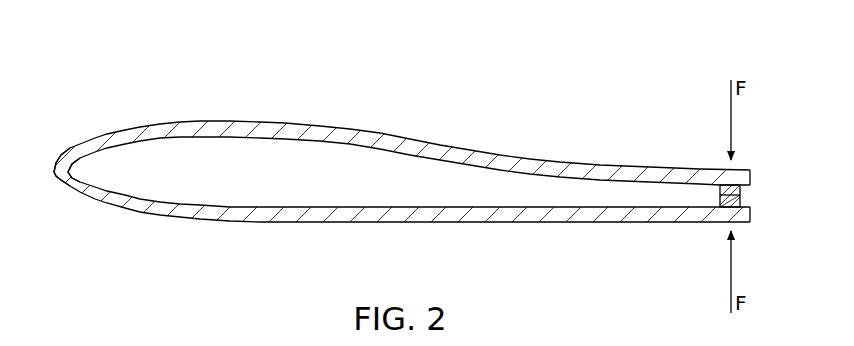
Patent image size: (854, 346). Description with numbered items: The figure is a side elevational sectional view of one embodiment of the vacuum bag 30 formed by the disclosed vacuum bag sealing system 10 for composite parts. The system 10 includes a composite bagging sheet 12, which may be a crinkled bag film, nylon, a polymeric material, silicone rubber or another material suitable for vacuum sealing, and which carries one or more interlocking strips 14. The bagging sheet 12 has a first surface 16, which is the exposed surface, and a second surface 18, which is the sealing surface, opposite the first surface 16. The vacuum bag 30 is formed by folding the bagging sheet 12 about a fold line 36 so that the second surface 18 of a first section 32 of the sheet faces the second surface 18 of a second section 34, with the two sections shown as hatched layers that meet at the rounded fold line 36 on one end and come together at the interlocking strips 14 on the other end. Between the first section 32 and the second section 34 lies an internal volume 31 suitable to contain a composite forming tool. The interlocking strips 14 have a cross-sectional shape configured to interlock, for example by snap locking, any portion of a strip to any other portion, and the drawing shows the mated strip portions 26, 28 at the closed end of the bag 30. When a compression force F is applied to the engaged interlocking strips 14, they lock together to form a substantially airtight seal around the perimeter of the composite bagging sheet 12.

The vacuum bag sealing system 10 is at (398, 139).
The composite bagging sheet 12 is at (125, 215).
The interlocking strip 14 is at (751, 182).
The first surface 16 is at (551, 157).
The second surface 18 is at (473, 160).
The upper trailing edge portion 26 is at (752, 172).
The lower trailing edge portion 28 is at (752, 216).
The vacuum bag 30 is at (398, 152).
The internal volume 31 is at (409, 165).
The first section 32 is at (330, 217).
The second section 34 is at (328, 130).
The fold line 36 is at (44, 173).